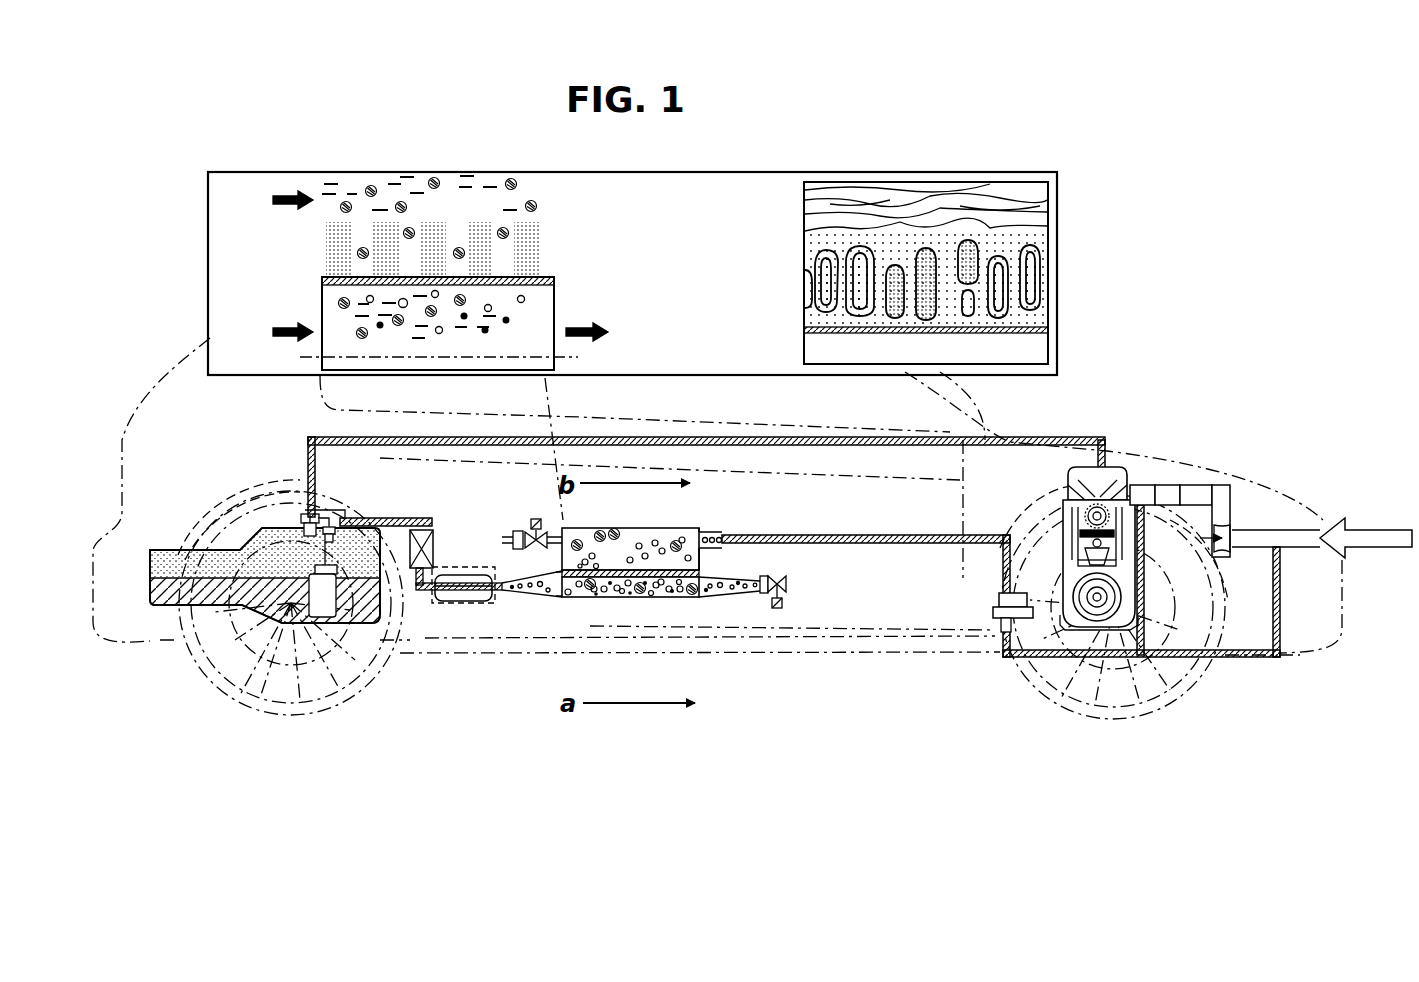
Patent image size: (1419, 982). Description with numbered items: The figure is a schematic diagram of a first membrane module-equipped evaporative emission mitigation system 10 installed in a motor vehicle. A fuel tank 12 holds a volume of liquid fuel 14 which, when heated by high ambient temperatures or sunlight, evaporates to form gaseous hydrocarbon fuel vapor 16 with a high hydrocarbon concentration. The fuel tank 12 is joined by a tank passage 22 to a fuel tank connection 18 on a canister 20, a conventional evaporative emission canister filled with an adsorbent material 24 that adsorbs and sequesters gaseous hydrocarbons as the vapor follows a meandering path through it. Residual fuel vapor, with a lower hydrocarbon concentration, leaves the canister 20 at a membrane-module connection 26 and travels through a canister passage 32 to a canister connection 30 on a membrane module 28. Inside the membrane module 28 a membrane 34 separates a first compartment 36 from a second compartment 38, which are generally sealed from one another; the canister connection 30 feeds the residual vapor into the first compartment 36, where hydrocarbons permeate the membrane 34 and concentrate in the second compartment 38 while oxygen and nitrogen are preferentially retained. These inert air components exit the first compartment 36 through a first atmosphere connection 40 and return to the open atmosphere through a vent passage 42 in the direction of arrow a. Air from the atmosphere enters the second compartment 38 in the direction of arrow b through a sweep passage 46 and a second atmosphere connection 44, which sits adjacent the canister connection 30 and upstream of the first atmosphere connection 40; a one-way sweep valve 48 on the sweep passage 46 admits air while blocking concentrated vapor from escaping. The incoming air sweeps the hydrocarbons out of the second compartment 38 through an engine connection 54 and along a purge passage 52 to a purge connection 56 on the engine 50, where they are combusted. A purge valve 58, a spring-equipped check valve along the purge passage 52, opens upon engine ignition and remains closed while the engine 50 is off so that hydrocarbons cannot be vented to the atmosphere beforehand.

The evaporative emission mitigation system 10 is at (1246, 370).
The fuel tank 12 is at (250, 620).
The liquid fuel 14 is at (160, 600).
The fuel vapor 16 is at (262, 545).
The fuel tank connection 18 is at (420, 590).
The canister 20 is at (463, 565).
The tank passage 22 is at (388, 518).
The adsorbent material 24 is at (460, 601).
The membrane-module connection 26 is at (507, 590).
The membrane module 28 is at (673, 588).
The canister connection 30 is at (567, 594).
The canister passage 32 is at (546, 595).
The membrane 34 is at (700, 572).
The first compartment 36 is at (645, 597).
The second compartment 38 is at (676, 530).
The first atmosphere connection 40 is at (712, 592).
The vent passage 42 is at (756, 580).
The second atmosphere connection 44 is at (566, 539).
The sweep passage 46 is at (512, 538).
The sweep valve 48 is at (537, 535).
The engine 50 is at (1126, 465).
The purge passage 52 is at (868, 535).
The engine connection 54 is at (724, 540).
The purge connection 56 is at (1146, 500).
The purge valve 58 is at (1000, 604).